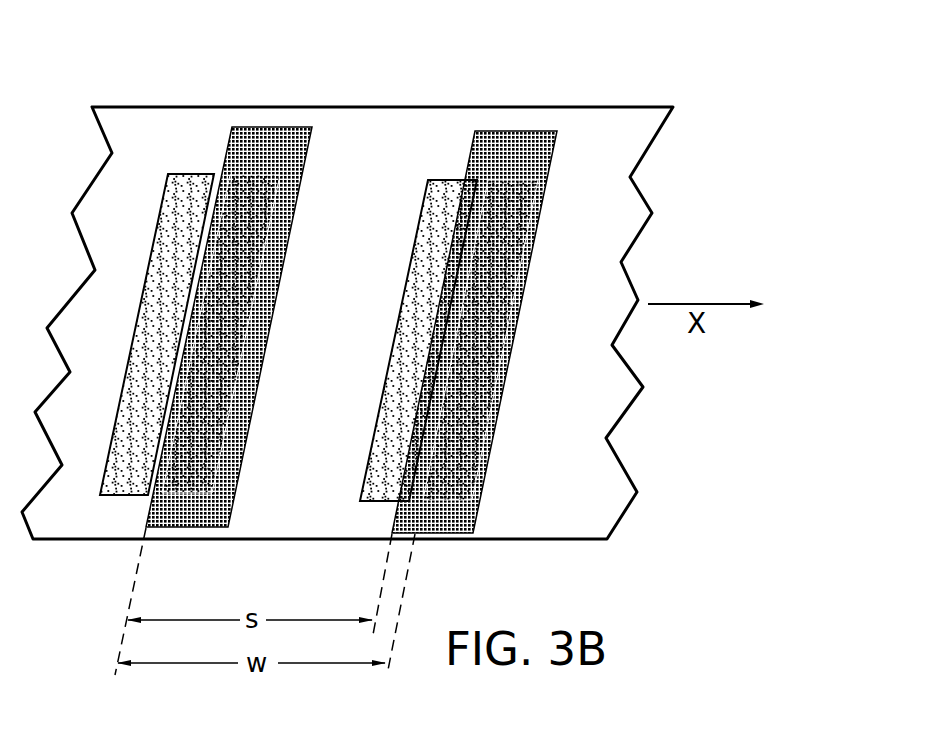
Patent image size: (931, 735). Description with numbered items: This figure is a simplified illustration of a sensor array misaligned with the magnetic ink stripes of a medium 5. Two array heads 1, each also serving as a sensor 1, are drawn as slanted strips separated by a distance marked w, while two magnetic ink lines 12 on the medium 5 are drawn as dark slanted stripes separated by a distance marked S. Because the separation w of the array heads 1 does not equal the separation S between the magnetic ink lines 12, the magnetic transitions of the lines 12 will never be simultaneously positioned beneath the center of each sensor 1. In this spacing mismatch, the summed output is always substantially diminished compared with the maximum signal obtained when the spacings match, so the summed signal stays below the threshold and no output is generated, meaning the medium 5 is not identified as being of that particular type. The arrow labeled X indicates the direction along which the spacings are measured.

The array head 1 is at (446, 148).
The medium 5 is at (147, 125).
The magnetic ink line 12 is at (266, 127).